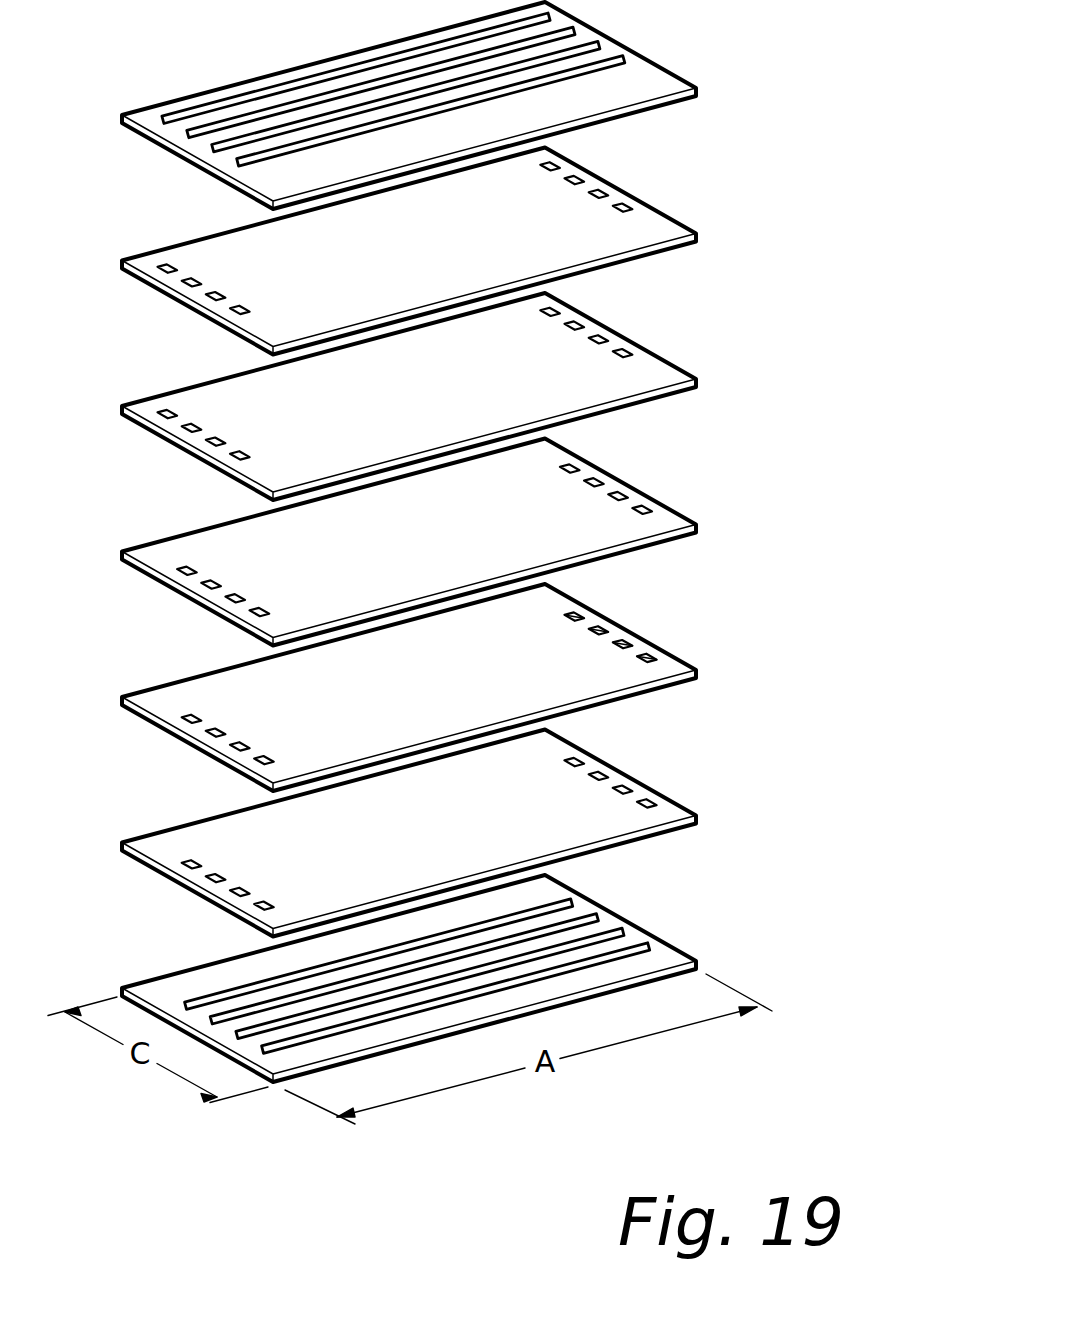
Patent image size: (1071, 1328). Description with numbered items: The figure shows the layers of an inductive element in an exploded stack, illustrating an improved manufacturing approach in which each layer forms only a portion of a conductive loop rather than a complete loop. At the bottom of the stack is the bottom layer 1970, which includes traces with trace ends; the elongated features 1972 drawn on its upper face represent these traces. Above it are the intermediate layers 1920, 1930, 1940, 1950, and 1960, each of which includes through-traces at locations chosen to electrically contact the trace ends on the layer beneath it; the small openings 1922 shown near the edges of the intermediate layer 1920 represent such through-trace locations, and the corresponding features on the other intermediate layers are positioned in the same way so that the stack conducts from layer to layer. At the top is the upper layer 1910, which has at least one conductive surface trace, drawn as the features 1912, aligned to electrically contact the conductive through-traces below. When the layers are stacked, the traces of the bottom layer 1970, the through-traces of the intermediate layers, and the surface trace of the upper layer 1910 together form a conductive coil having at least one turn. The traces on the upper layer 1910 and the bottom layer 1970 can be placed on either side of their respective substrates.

The upper layer 1910 is at (416, 105).
The slots in first layer 1912 is at (178, 117).
The intermediate layer 1920 is at (402, 251).
The openings in second layer 1922 is at (346, 238).
The intermediate layer 1930 is at (433, 396).
The intermediate layer 1940 is at (433, 542).
The intermediate layer 1950 is at (433, 687).
The intermediate layer 1960 is at (433, 833).
The bottom layer 1970 is at (421, 978).
The slots in seventh layer 1972 is at (374, 976).